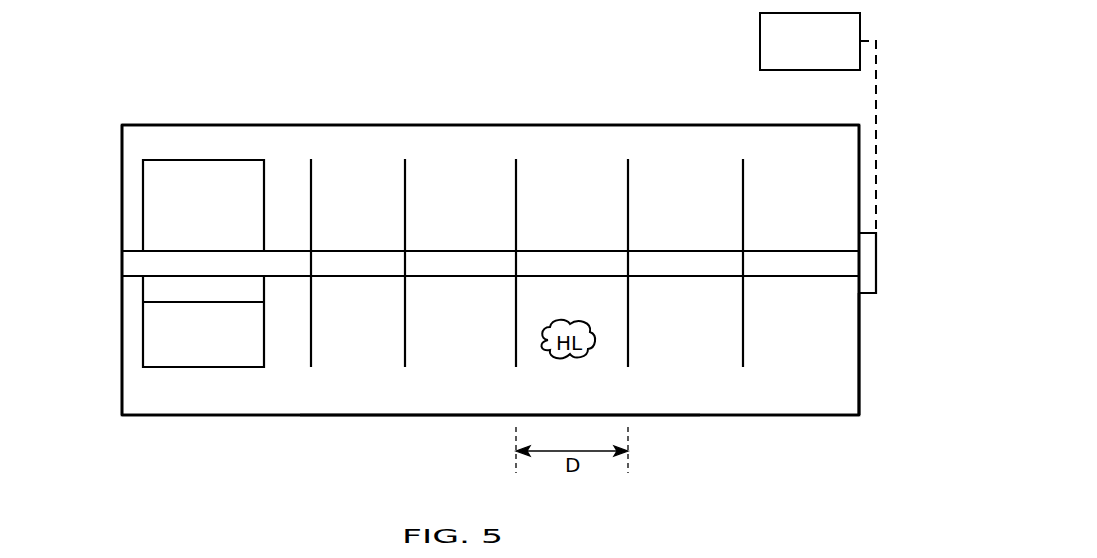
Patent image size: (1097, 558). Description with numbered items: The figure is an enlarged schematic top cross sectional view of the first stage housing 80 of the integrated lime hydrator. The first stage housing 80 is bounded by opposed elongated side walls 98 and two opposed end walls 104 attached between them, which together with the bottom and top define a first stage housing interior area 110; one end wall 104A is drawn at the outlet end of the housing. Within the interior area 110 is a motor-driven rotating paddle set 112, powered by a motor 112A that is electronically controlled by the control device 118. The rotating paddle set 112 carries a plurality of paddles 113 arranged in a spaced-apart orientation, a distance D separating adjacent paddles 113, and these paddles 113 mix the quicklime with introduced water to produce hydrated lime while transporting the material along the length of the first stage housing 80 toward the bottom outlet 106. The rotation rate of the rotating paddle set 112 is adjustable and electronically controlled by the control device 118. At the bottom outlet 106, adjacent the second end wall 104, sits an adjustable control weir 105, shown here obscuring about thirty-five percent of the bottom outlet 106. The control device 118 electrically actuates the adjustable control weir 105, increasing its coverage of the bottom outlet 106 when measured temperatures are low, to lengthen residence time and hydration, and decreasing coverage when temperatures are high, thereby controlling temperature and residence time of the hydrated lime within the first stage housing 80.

The first stage housing 80 is at (482, 110).
The elongated side walls 98 is at (673, 124).
The end walls 104 is at (121, 322).
The side wall portion 104A is at (857, 375).
The adjustable control weir 105 is at (230, 360).
The bottom outlet 106 is at (197, 175).
The first stage housing interior area 110 is at (431, 405).
The rotating paddle set 112 is at (743, 348).
The motor 112A is at (866, 262).
The paddles 113 is at (405, 211).
The control device 118 is at (832, 52).